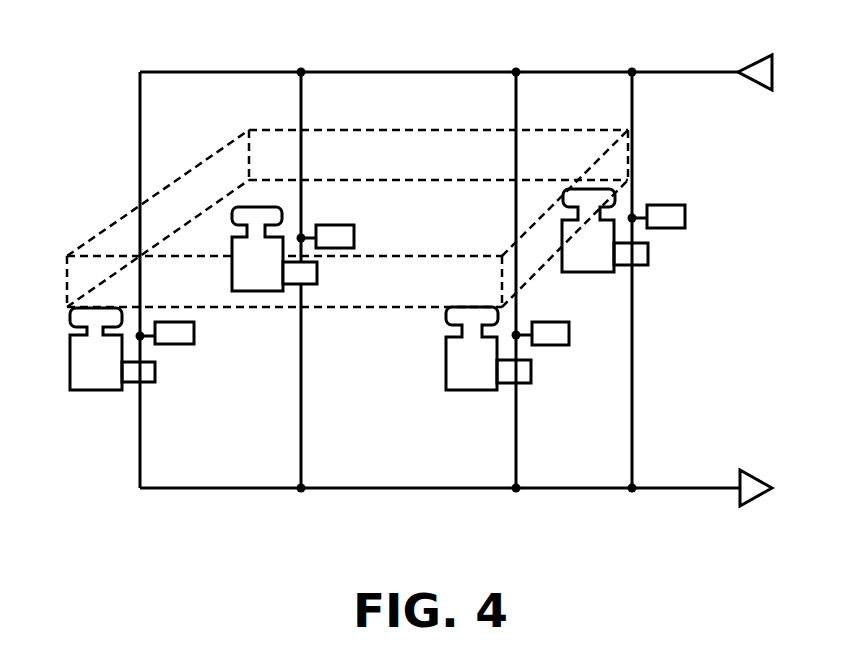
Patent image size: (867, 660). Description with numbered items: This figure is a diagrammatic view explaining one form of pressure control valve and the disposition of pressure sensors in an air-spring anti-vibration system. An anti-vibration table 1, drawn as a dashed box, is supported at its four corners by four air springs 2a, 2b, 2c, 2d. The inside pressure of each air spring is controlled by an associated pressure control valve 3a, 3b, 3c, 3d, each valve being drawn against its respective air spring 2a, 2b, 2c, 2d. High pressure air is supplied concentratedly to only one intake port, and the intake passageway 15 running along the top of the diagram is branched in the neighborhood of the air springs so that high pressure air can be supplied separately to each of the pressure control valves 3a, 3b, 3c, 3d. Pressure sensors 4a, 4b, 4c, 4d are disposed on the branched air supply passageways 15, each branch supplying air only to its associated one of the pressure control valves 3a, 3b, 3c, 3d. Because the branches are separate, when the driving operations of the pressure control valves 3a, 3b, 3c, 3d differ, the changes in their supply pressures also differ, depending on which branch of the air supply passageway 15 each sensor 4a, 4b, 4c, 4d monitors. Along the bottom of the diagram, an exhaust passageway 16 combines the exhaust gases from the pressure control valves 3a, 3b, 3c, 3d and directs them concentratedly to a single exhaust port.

The anti-vibration table 1 is at (102, 232).
The air spring 2a is at (95, 390).
The air spring 2b is at (472, 390).
The air spring 2c is at (592, 272).
The air spring 2d is at (232, 280).
The pressure control valve 3a is at (155, 372).
The pressure control valve 3b is at (531, 372).
The pressure control valve 3c is at (648, 254).
The pressure control valve 3d is at (317, 273).
The pressure sensor 4a is at (194, 336).
The pressure sensor 4b is at (569, 335).
The pressure sensor 4c is at (685, 217).
The pressure sensor 4d is at (354, 237).
The intake passageway 15 is at (243, 72).
The exhaust passageway 16 is at (243, 488).